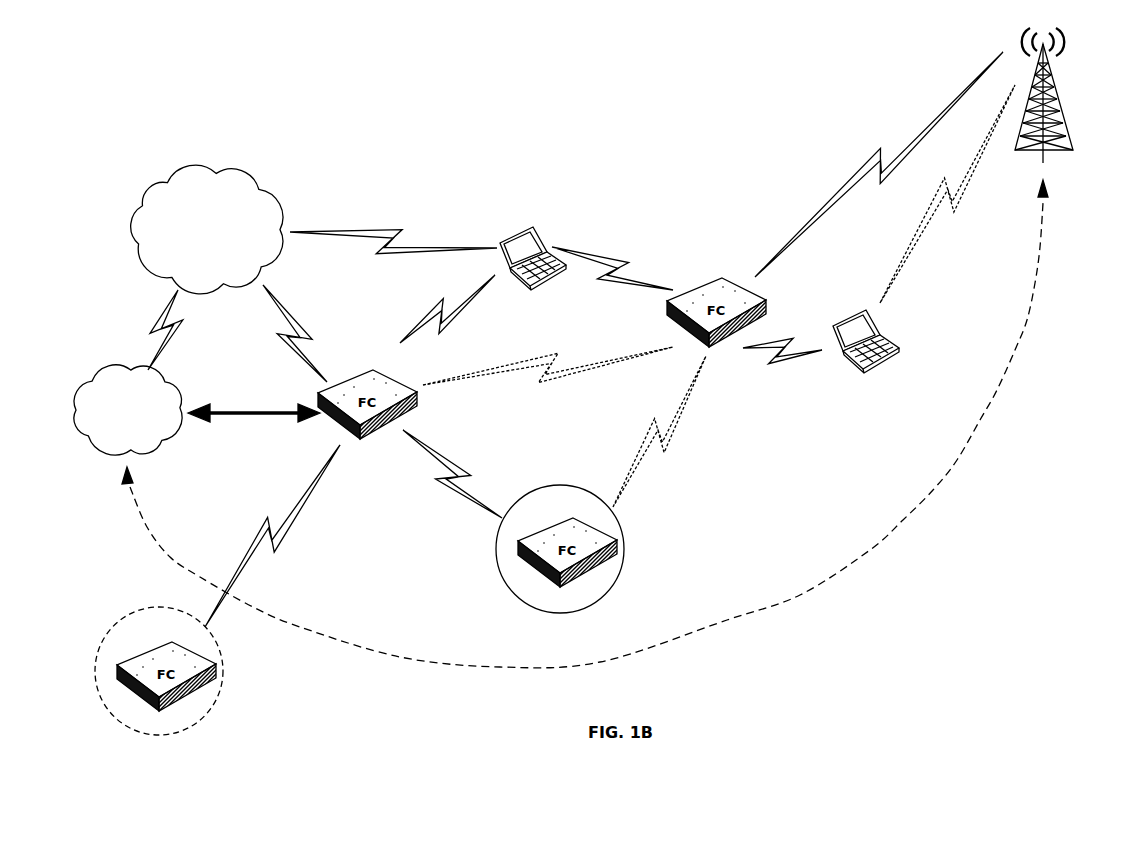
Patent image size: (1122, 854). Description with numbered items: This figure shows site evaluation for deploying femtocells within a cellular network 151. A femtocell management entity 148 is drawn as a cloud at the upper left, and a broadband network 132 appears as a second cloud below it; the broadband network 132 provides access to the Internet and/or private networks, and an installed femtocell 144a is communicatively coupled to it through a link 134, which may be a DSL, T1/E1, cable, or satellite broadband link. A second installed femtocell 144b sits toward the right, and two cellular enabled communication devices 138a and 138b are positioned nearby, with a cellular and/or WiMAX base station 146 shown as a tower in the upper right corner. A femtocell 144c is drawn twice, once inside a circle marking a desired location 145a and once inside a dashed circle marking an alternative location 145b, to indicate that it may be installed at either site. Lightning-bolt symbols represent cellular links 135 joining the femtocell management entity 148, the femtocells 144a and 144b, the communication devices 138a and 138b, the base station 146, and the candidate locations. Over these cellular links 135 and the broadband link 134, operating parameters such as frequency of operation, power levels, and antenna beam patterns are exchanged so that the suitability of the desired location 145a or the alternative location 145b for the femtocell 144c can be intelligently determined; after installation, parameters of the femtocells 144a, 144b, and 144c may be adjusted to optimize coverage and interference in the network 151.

The network 151 is at (124, 80).
The femtocell management entity 148 is at (207, 170).
The broadband network 132 is at (120, 371).
The link 134 is at (270, 411).
The cellular links 135 is at (360, 230).
The cellular enabled communication device 138a is at (531, 287).
The cellular enabled communication device 138b is at (871, 367).
The installed femtocell 144a is at (350, 379).
The installed femtocell 144b is at (703, 291).
The femtocell 144c is at (549, 531).
The desired location 145a is at (568, 486).
The alternative location 145b is at (168, 607).
The cellular and/or WiMAX base station 146 is at (1051, 82).